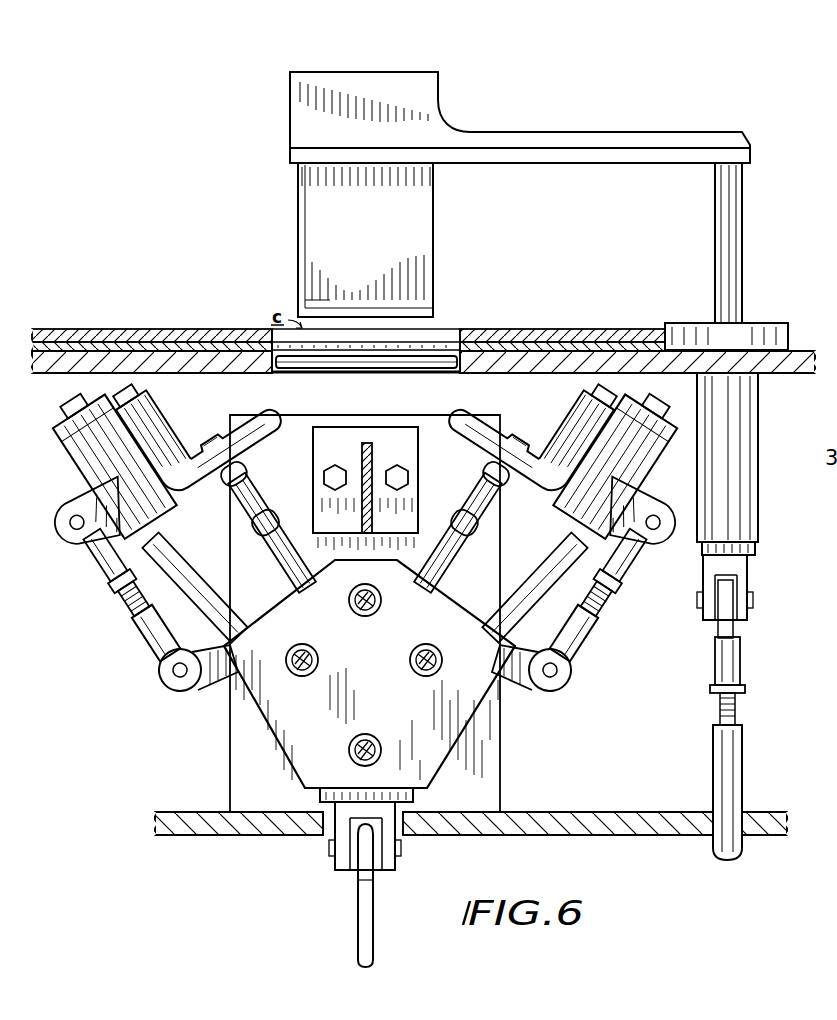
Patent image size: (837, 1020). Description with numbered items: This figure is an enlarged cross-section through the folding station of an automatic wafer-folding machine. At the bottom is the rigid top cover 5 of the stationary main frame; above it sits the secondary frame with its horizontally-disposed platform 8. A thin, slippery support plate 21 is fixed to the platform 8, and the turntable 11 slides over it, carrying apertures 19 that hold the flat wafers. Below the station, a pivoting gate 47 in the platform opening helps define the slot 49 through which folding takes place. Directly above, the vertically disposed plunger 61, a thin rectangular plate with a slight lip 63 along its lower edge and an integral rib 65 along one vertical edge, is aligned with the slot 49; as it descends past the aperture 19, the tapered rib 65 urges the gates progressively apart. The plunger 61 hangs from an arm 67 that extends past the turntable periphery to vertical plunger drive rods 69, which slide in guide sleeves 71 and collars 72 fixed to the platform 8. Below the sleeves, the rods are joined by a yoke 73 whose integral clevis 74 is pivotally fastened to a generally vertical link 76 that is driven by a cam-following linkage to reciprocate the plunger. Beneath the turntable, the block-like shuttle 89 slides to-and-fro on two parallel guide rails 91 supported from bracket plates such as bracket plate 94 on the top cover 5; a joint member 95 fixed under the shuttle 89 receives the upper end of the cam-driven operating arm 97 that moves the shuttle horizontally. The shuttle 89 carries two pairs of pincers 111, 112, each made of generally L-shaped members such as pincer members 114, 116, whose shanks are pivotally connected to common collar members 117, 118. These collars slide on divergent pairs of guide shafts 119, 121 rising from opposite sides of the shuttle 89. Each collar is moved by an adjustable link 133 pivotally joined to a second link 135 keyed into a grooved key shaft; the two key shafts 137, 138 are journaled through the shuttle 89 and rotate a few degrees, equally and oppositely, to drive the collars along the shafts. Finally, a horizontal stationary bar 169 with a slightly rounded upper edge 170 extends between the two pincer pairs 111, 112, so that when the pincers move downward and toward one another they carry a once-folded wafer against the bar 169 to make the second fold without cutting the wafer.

The top cover 5 is at (270, 835).
The platform 8 is at (806, 340).
The turntable 11 is at (172, 340).
The apertures 19 is at (449, 330).
The support plate 21 is at (109, 330).
The gate 47 is at (309, 372).
The slot 49 is at (372, 372).
The plunger 61 is at (408, 236).
The lip 63 is at (328, 302).
The rib 65 is at (298, 218).
The arm 67 is at (557, 147).
The plunger drive rods 69 is at (740, 232).
The guide sleeves 71 is at (756, 432).
The collars 72 is at (760, 322).
The yoke 73 is at (746, 562).
The clevis 74 is at (750, 592).
The link 76 is at (740, 790).
The shuttle 89 is at (302, 752).
The guide rails 91 is at (380, 602).
The bracket plate 94 is at (438, 418).
The joint member 95 is at (398, 862).
The operating arm 97 is at (360, 912).
The pincer pair 111 is at (549, 444).
The pincer pair 112 is at (187, 447).
The L-shaped pincer member 114 is at (514, 440).
The L-shaped pincer member 116 is at (155, 440).
The collar member 117 is at (660, 450).
The collar member 118 is at (90, 462).
The guide shafts 119 is at (150, 620).
The guide shafts 121 is at (554, 538).
The adjustable link 133 is at (605, 610).
The second link 135 is at (527, 685).
The key shaft 137 is at (444, 640).
The key shaft 138 is at (319, 618).
The stationary bar 169 is at (360, 505).
The upper edge 170 is at (372, 448).